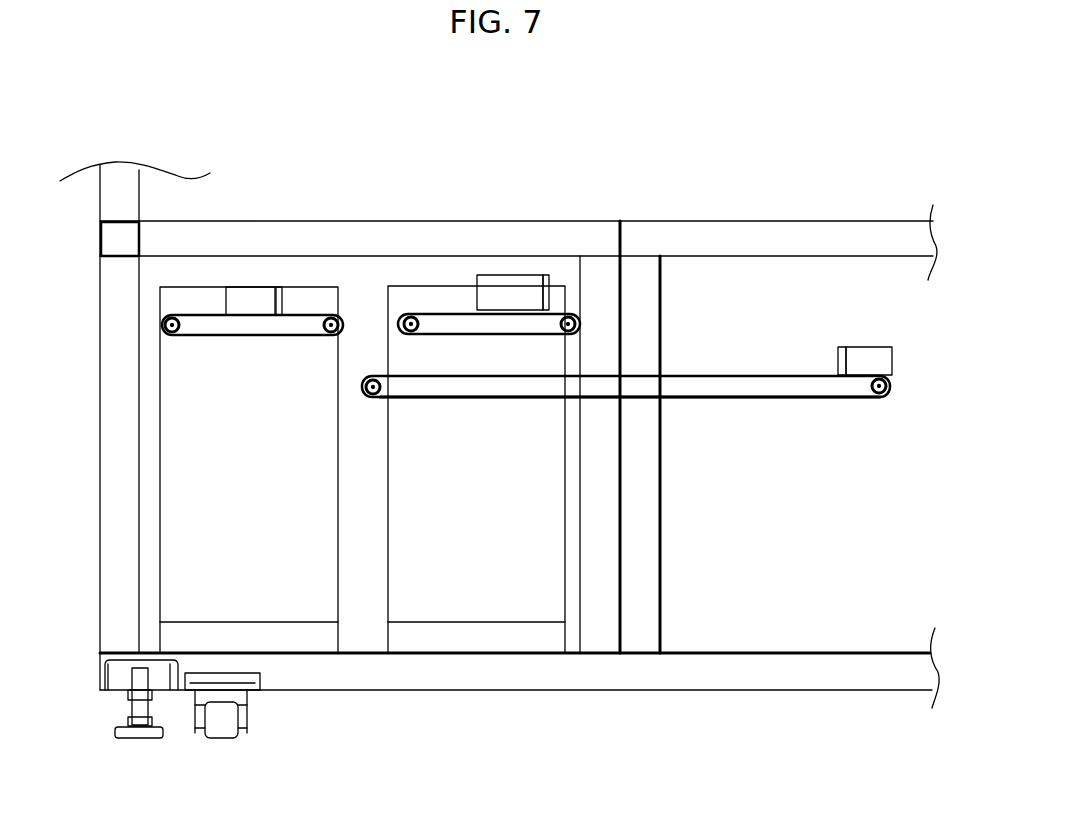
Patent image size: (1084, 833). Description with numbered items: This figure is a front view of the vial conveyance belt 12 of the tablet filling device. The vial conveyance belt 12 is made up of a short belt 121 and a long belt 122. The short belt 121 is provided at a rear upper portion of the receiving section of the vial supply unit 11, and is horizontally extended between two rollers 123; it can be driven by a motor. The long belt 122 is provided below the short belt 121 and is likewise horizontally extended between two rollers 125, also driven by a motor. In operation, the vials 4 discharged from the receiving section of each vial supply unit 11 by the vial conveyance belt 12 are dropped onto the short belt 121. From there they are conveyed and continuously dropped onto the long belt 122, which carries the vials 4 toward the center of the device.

The vial 4 is at (246, 297).
The vial supply unit 11 is at (305, 605).
The vial conveyance belt 12 is at (717, 295).
The short belt 121 is at (310, 325).
The long belt 122 is at (790, 374).
The roller 123 is at (165, 323).
The roller 125 is at (373, 396).